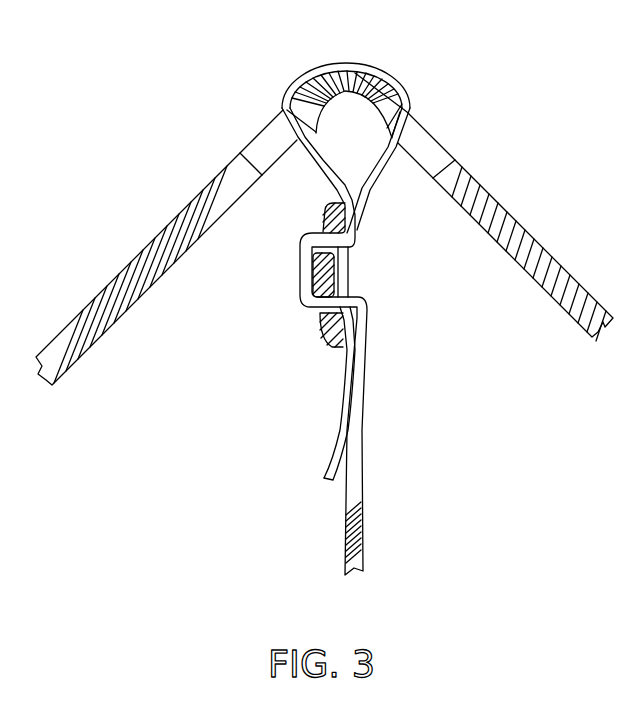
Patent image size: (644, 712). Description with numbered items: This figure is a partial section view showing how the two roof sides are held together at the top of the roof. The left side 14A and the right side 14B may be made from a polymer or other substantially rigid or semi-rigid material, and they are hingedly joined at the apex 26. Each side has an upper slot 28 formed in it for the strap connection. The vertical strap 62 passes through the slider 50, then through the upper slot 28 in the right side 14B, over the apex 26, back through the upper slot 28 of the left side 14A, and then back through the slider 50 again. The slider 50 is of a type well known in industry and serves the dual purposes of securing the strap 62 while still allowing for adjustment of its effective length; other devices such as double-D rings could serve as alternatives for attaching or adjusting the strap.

The left roof side 14A is at (193, 200).
The right roof side 14B is at (483, 188).
The apex 26 is at (356, 68).
The upper slot 28 is at (243, 155).
The slider 50 is at (322, 333).
The vertical strap 62 is at (363, 460).